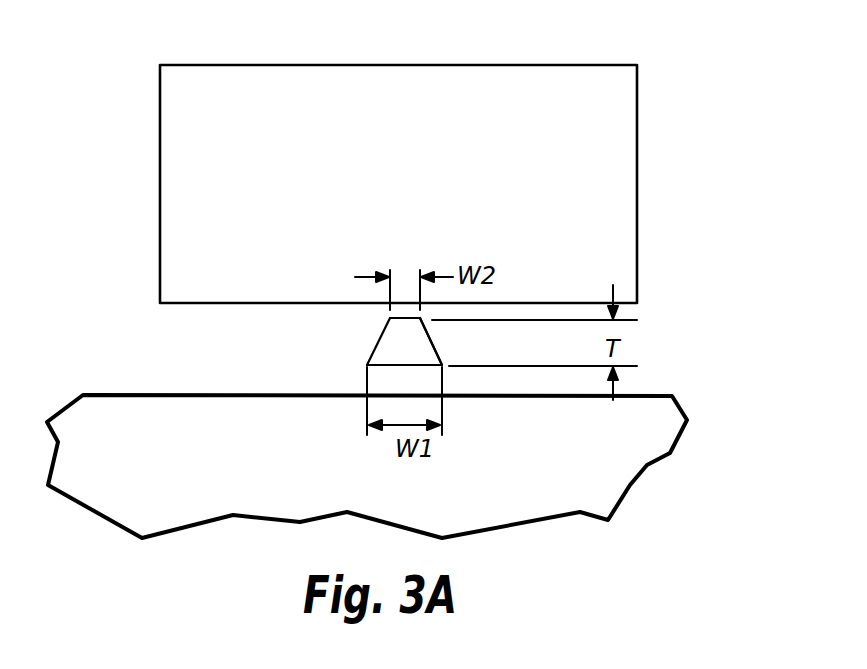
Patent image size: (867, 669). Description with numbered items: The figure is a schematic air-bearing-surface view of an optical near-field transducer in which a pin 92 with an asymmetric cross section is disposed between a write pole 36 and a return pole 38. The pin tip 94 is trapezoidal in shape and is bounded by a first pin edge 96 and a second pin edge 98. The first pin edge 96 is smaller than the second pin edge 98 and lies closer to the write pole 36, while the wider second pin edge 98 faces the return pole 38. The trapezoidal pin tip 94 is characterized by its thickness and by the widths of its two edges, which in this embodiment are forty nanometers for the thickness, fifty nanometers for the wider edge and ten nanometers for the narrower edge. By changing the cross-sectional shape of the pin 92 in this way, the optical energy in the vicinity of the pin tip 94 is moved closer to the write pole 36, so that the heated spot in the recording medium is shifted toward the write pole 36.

The write pole 36 is at (443, 77).
The return pole 38 is at (648, 430).
The pin 92 is at (372, 332).
The pin tip 94 is at (415, 350).
The first pin edge 96 is at (398, 318).
The second pin edge 98 is at (412, 367).